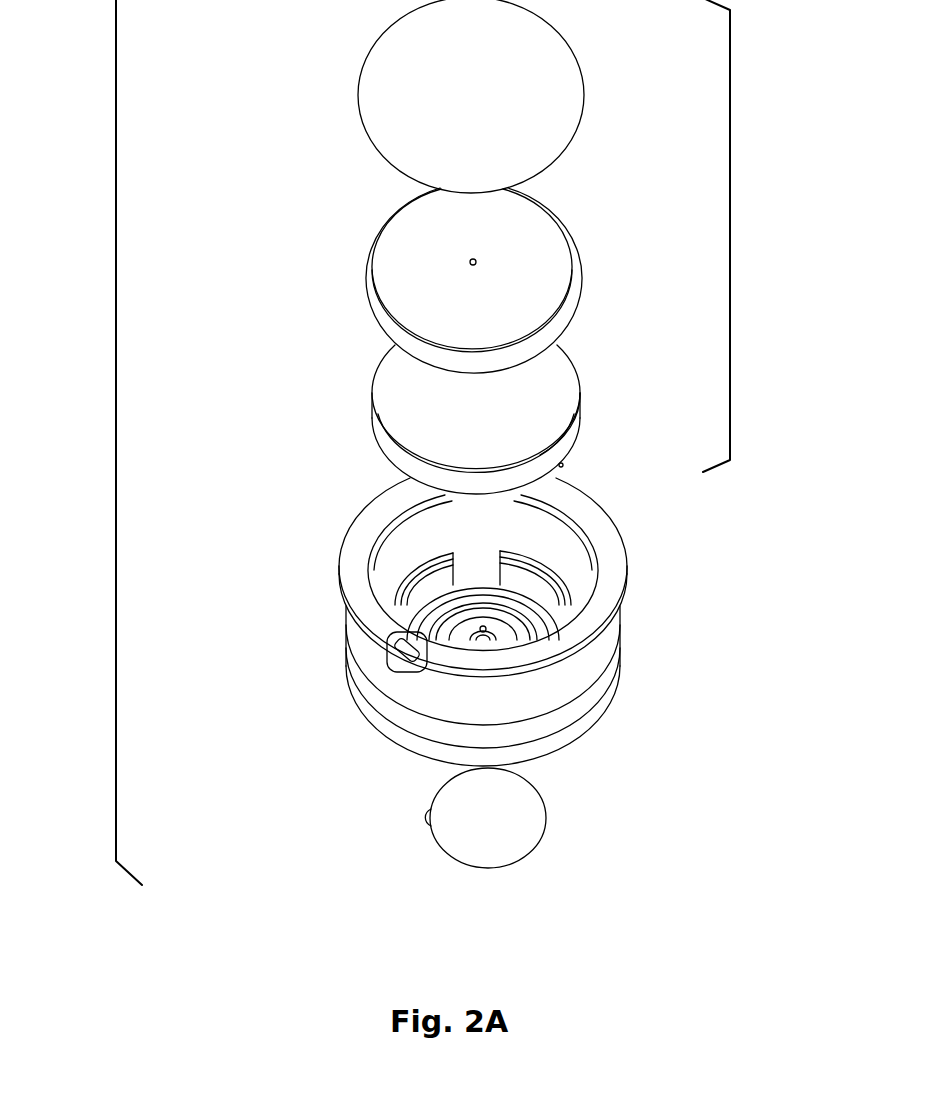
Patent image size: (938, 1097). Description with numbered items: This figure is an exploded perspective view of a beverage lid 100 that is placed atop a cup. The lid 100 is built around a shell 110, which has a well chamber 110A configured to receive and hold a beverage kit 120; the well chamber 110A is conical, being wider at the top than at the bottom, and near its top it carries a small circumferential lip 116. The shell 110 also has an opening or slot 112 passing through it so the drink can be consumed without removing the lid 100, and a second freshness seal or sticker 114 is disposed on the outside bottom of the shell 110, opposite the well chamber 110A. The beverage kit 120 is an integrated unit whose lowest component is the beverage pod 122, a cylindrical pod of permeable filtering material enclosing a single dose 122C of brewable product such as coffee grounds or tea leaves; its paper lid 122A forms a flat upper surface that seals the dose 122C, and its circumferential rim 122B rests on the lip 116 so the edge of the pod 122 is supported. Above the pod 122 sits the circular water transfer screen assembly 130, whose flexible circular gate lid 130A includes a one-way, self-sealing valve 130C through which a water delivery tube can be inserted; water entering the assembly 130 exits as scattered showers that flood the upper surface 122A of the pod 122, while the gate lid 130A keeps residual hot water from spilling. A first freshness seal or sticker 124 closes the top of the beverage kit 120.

The lid 100 is at (116, 410).
The beverage kit 120 is at (735, 262).
The first freshness seal or sticker 124 is at (493, 113).
The circular water transfer screen assembly 130 is at (500, 280).
The circular gate lid 130A is at (513, 313).
The one-way, self-sealing valve 130C is at (458, 258).
The beverage pod 122 is at (489, 419).
The paper lid 122A is at (513, 425).
The circumferential rim 122B is at (595, 385).
The single dose 122C is at (453, 480).
The shell 110 is at (506, 622).
The well chamber 110A is at (429, 534).
The circumferential lip 116 is at (583, 531).
The opening or slot 112 is at (387, 656).
The second freshness seal or sticker 114 is at (503, 825).